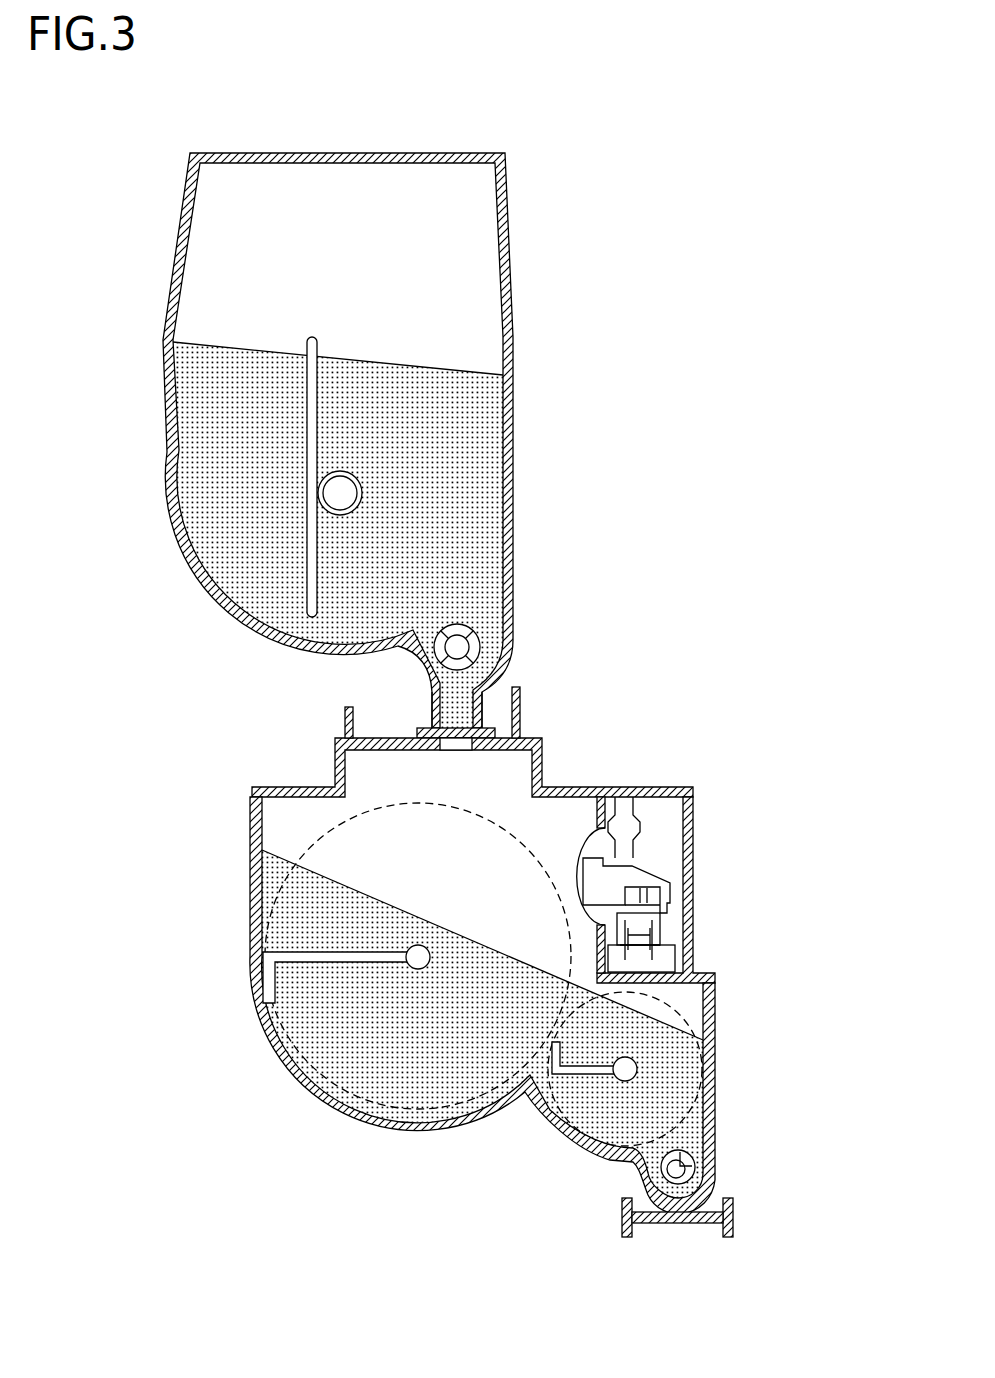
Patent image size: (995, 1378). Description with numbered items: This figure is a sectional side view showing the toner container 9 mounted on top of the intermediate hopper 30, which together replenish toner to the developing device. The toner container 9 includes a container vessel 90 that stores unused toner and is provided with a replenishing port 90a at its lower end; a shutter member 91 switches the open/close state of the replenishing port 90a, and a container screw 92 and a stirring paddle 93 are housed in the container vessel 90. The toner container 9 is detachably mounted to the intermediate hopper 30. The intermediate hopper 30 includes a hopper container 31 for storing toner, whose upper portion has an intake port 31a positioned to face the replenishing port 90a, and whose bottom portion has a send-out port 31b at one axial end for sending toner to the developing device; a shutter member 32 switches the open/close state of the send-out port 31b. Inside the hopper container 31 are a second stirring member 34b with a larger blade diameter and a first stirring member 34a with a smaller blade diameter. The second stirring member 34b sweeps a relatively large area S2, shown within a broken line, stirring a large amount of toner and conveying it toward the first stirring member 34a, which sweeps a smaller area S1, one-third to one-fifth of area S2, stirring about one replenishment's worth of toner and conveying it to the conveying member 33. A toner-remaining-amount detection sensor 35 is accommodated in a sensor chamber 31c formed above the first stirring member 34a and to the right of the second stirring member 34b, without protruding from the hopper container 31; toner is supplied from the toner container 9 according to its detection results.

The toner container 9 is at (210, 148).
The container vessel 90 is at (180, 222).
The stirring paddle 93 is at (305, 398).
The replenishing port 90a is at (430, 707).
The container screw 92 is at (478, 645).
The shutter member 91 is at (495, 735).
The intermediate hopper 30 is at (240, 795).
The hopper container 31 is at (250, 903).
The intake port 31a is at (457, 750).
The sensor chamber 31c is at (663, 840).
The toner-remaining-amount detection sensor 35 is at (673, 895).
The area S2 is at (573, 935).
The area S1 is at (718, 1112).
The second stirring member 34b is at (333, 962).
The first stirring member 34a is at (572, 1075).
The conveying member 33 is at (688, 1152).
The send-out port 31b is at (715, 1183).
The shutter member 32 is at (675, 1223).